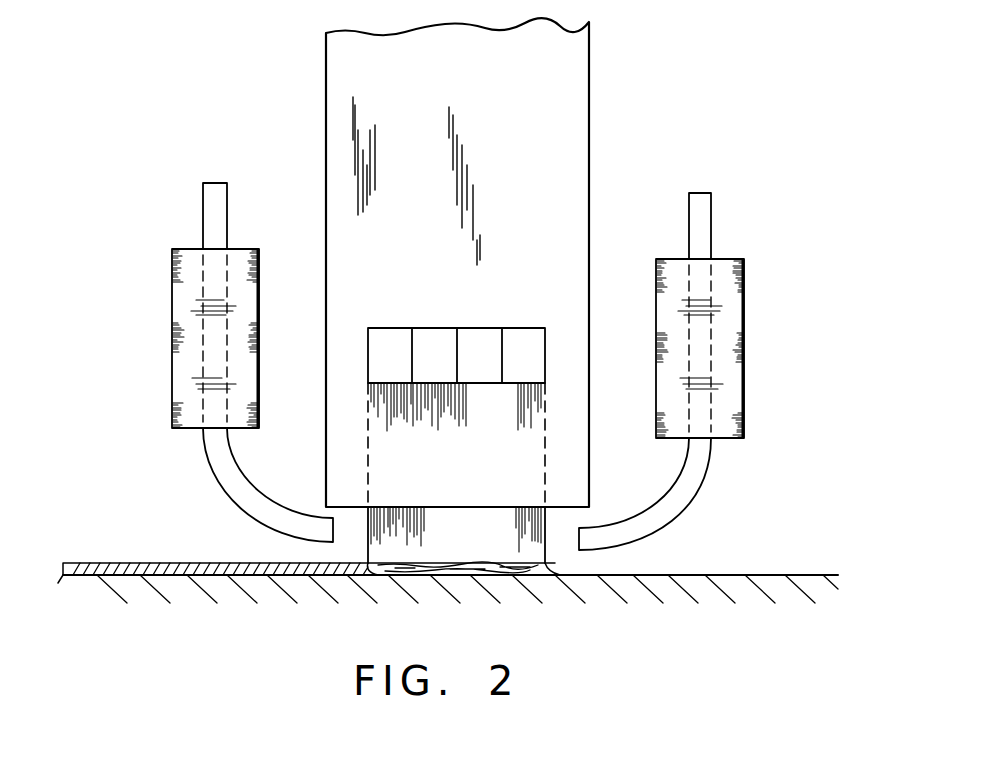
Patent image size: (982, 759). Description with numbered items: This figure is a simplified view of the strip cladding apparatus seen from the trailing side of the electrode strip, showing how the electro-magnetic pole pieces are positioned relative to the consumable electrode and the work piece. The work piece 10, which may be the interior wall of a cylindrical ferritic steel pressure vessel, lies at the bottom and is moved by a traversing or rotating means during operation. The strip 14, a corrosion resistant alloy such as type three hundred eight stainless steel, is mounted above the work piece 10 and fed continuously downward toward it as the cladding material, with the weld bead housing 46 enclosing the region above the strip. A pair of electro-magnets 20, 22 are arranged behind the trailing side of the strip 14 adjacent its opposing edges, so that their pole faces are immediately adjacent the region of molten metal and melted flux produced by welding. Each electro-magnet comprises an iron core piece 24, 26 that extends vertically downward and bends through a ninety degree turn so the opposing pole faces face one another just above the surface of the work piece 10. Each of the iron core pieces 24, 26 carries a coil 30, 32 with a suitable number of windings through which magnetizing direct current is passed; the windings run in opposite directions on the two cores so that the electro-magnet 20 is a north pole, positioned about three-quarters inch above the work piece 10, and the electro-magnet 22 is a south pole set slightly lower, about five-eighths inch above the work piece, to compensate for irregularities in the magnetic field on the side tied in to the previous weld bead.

The work piece 10 is at (752, 575).
The strip 14 is at (545, 552).
The electro-magnet 20 is at (200, 362).
The electro-magnet 22 is at (718, 371).
The iron core piece 24 is at (242, 497).
The iron core piece 26 is at (685, 493).
The coil 30 is at (172, 305).
The coil 32 is at (744, 307).
The weld bead housing 46 is at (583, 108).